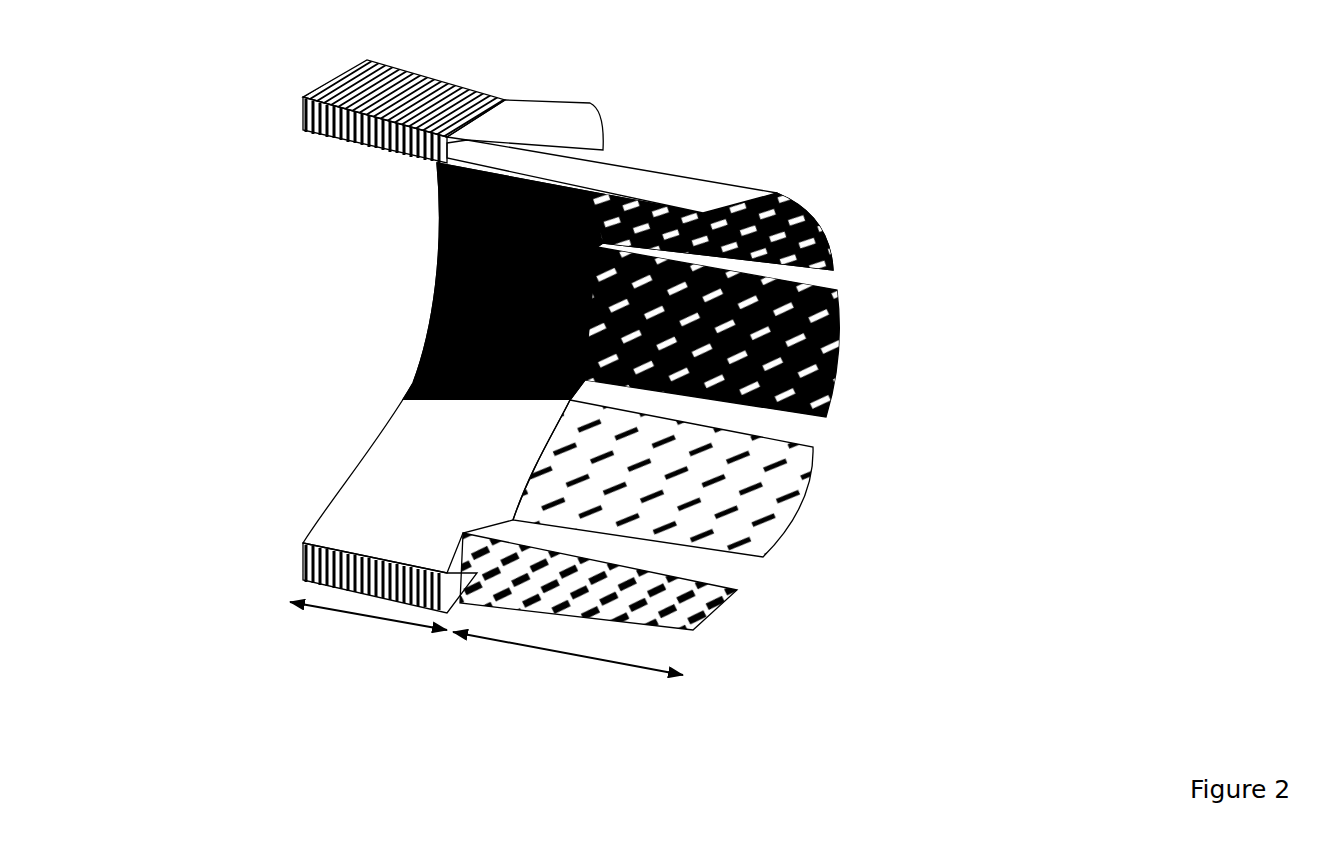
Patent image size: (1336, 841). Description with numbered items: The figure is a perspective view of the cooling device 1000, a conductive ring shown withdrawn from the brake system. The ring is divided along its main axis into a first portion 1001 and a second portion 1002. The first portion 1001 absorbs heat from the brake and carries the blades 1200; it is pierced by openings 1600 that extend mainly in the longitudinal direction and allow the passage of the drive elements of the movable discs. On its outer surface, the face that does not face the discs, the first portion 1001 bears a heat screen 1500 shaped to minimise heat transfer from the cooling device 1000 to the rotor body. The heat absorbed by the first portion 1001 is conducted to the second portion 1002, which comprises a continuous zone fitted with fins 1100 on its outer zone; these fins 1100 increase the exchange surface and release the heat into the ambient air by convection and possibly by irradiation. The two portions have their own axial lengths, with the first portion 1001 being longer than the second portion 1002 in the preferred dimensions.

The cooling device 1000 is at (615, 400).
The fins 1100 is at (397, 120).
The blades 1200 is at (827, 347).
The heat screen 1500 is at (687, 183).
The openings 1600 is at (740, 572).
The first portion 1001 is at (565, 622).
The second portion 1002 is at (353, 622).